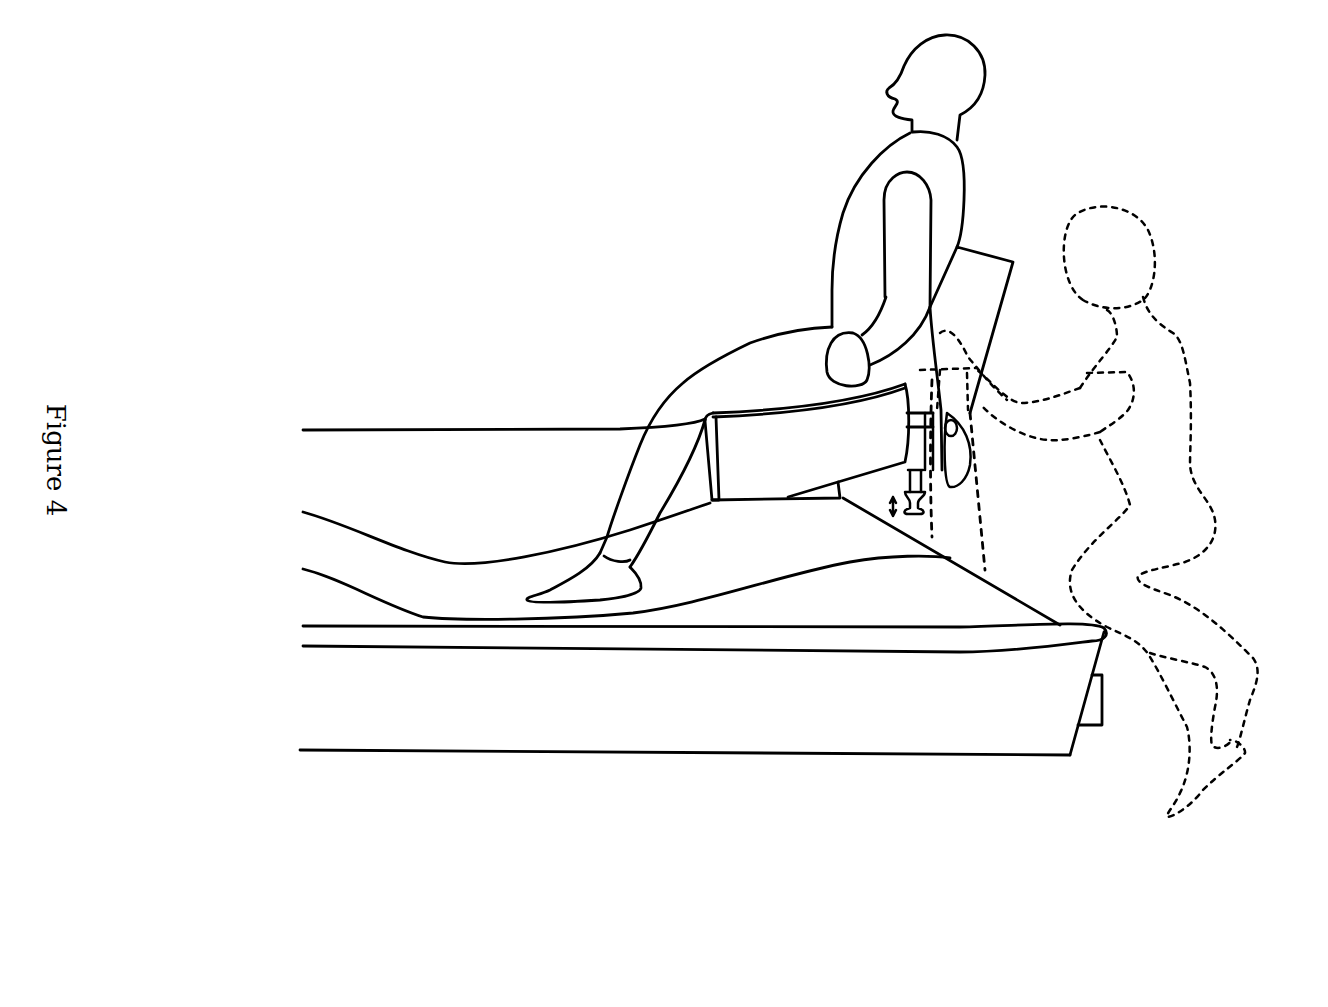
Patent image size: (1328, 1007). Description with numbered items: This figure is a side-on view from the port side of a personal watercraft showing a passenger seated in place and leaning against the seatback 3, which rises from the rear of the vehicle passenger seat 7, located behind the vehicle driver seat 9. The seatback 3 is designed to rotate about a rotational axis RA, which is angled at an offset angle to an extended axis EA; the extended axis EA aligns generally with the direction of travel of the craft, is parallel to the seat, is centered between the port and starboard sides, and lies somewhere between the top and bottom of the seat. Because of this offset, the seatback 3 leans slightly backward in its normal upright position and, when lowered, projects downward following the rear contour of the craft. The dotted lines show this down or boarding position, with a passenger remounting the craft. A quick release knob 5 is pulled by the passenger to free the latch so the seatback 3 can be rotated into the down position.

The seatback 3 is at (986, 303).
The quick release knob 5 is at (893, 512).
The vehicle passenger seat 7 is at (880, 460).
The vehicle driver seat 9 is at (493, 525).
The extended axis EA is at (857, 466).
The rotational axis RA is at (683, 463).